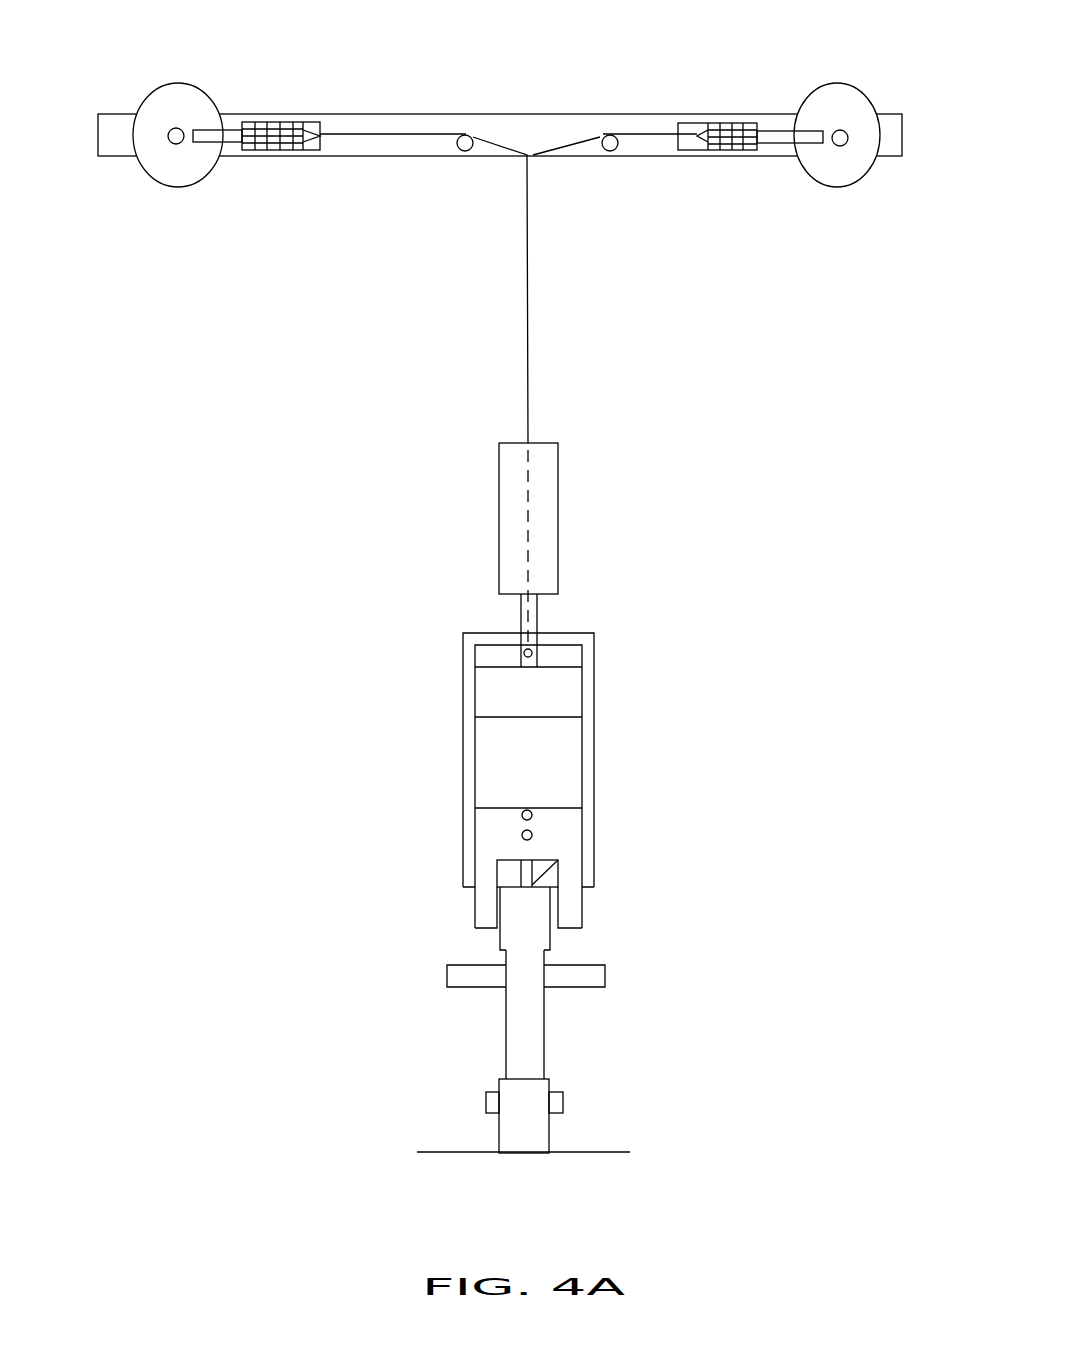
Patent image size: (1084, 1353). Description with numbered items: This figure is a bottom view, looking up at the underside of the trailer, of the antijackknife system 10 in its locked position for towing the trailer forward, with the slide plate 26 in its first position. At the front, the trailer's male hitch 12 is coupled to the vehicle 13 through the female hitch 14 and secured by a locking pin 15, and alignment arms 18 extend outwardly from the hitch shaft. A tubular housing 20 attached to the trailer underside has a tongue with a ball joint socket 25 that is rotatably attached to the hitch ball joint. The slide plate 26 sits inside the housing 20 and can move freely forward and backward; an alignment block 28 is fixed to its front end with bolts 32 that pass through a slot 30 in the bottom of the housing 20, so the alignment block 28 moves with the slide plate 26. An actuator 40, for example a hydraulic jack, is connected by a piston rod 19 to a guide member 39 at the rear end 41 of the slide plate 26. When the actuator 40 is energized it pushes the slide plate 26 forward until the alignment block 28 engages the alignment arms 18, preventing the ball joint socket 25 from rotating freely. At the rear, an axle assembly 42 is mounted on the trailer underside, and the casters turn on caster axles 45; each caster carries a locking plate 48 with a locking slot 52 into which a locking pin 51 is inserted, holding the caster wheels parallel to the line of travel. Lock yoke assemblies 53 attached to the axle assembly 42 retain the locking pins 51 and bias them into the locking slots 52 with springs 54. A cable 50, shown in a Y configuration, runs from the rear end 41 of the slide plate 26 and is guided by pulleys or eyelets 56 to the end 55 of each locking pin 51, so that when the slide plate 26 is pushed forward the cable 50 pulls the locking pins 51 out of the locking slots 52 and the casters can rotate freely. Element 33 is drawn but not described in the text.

The antijackknife system 10 is at (690, 330).
The male hitch 12 is at (545, 1045).
The vehicle 13 is at (575, 1153).
The female hitch 14 is at (549, 1135).
The locking pin 15 is at (486, 1105).
The alignment arms 18 is at (455, 987).
The piston rod 19 is at (521, 622).
The tubular housing 20 is at (463, 790).
The ball joint socket 25 is at (550, 945).
The slide plate 26 is at (560, 755).
The alignment block 28 is at (560, 822).
The slot 30 is at (540, 875).
The bolts 32 is at (510, 822).
The valve 33 is at (553, 885).
The guide member 39 is at (562, 690).
The actuator 40 is at (562, 480).
The rear end 41 is at (562, 650).
The axle assembly 42 is at (460, 113).
The caster axles 45 is at (176, 145).
The locking plates 48 is at (200, 187).
The cable 50 is at (528, 295).
The locking pins 51 is at (234, 128).
The locking slots 52 is at (205, 123).
The lock yoke assemblies 53 is at (310, 151).
The springs 54 is at (300, 151).
The end 55 is at (320, 128).
The pulleys or eyelets 56 is at (463, 157).